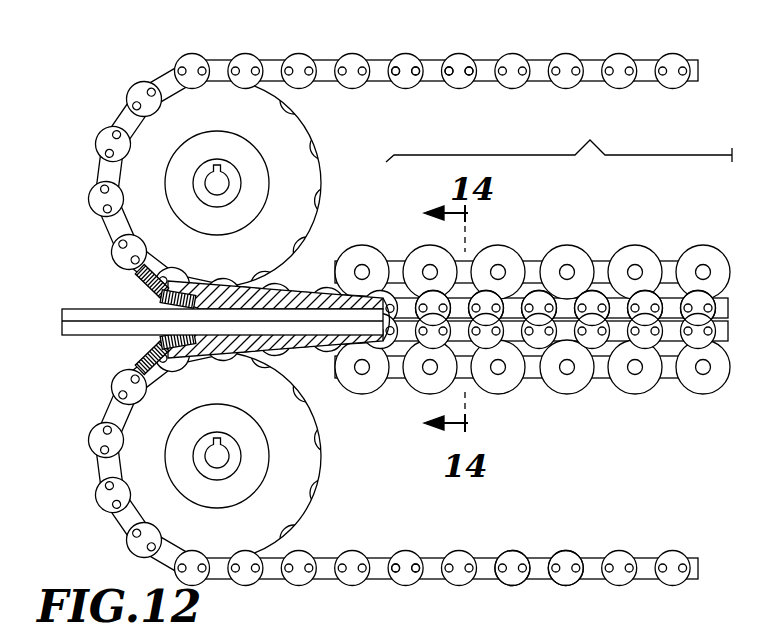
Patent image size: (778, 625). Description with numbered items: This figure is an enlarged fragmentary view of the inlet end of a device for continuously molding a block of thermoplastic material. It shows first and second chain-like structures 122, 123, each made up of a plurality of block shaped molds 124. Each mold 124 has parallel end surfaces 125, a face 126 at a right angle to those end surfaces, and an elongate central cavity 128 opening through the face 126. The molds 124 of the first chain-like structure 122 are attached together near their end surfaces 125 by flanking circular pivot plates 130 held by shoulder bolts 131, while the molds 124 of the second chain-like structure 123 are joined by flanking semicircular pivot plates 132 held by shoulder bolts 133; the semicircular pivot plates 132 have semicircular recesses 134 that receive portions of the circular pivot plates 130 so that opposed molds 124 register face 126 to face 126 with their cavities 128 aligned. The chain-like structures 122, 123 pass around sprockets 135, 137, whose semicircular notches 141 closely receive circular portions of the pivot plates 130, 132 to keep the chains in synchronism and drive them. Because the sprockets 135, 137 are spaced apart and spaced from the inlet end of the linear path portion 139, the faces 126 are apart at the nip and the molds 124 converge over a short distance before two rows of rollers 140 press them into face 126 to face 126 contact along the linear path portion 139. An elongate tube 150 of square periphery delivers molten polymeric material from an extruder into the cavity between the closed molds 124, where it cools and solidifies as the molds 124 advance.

The first chain-like structure 122 is at (597, 56).
The second chain-like structure 123 is at (593, 582).
The block shaped mold 124 is at (530, 86).
The end surface 125 is at (127, 380).
The face 126 is at (98, 165).
The cavity 128 is at (201, 302).
The circular pivot plate 130 is at (453, 56).
The shoulder bolt 131 is at (450, 89).
The semicircular pivot plate 132 is at (535, 348).
The shoulder bolt 133 is at (414, 556).
The semicircular recess 134 is at (558, 580).
The sprocket 135 is at (301, 216).
The sprocket 137 is at (302, 433).
The linear path portion 139 is at (559, 133).
The roller 140 is at (622, 254).
The semicircular notch 141 is at (316, 147).
The elongate tube 150 is at (76, 308).